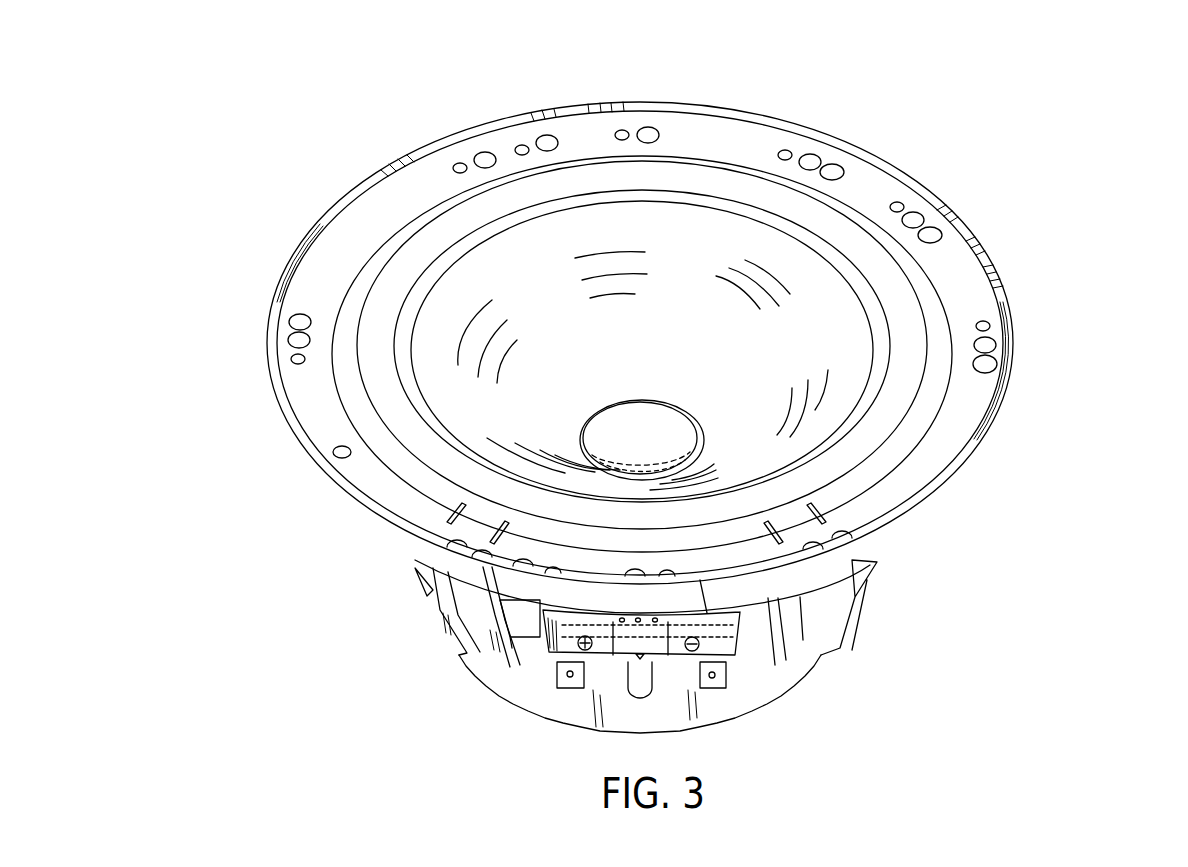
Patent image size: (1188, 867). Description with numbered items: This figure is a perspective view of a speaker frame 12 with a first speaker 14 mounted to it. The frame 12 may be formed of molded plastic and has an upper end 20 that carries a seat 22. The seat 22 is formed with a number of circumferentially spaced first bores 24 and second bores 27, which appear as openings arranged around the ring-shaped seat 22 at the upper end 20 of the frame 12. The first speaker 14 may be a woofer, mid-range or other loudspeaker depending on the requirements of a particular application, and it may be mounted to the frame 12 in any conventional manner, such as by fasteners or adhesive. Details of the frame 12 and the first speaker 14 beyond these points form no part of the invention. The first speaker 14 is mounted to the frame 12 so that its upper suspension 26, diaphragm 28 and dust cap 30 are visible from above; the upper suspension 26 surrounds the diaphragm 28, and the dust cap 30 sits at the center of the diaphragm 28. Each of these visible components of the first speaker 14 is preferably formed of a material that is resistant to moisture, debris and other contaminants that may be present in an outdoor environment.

The frame 12 is at (1025, 168).
The first speaker 14 is at (522, 630).
The upper end 20 is at (968, 497).
The seat 22 is at (967, 280).
The first bores 24 is at (485, 153).
The upper suspension 26 is at (423, 247).
The second bores 27 is at (458, 164).
The diaphragm 28 is at (620, 235).
The dust cap 30 is at (590, 468).